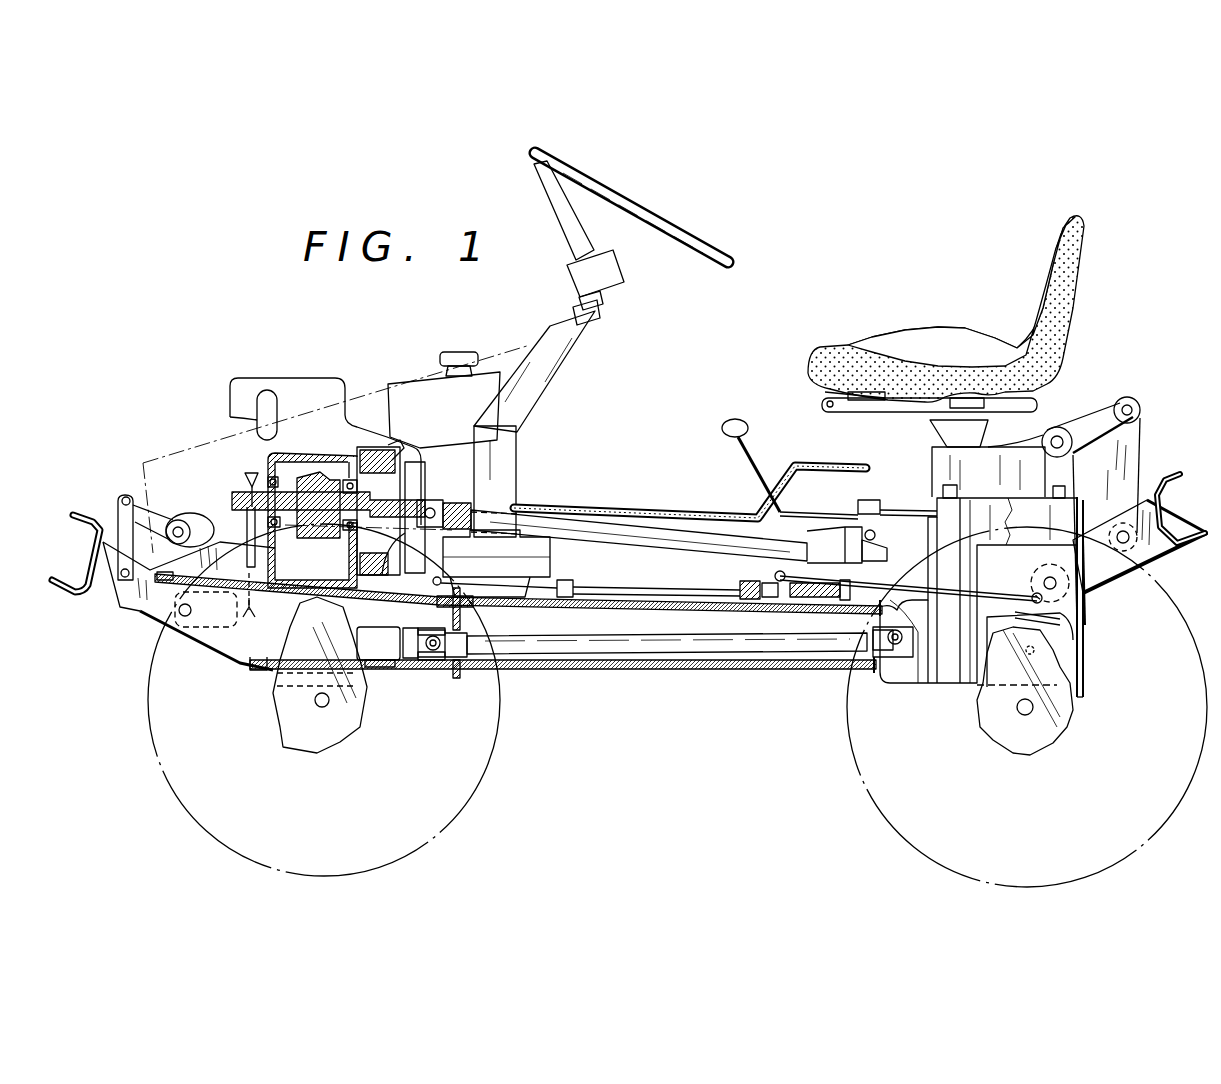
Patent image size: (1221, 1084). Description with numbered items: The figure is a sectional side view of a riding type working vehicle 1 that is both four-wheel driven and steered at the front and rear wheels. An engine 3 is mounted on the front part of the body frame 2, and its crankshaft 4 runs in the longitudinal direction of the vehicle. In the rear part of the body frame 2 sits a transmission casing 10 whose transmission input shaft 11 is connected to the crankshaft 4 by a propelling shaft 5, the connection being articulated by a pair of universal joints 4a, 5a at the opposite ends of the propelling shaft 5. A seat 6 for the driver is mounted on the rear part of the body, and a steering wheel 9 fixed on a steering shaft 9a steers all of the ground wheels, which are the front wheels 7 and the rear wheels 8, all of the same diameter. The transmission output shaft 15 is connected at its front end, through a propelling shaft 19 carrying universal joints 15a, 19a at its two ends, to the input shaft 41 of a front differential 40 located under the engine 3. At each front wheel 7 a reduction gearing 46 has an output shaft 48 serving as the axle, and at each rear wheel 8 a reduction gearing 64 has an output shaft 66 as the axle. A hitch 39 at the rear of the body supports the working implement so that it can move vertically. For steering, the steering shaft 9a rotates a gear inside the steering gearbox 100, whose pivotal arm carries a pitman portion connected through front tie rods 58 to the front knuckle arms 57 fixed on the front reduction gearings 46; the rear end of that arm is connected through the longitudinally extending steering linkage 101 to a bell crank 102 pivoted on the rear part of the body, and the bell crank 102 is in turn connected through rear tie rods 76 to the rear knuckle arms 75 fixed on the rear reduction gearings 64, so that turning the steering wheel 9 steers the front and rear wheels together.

The riding type working vehicle 1 is at (822, 278).
The body frame 2 is at (677, 672).
The engine 3 is at (324, 452).
The crankshaft 4 is at (381, 452).
The universal joint 4a is at (460, 505).
The propelling shaft 5 is at (622, 526).
The universal joint 5a is at (828, 532).
The seat 6 is at (975, 350).
The front wheel 7 is at (178, 810).
The rear wheel 8 is at (893, 828).
The steering wheel 9 is at (720, 258).
The steering shaft 9a is at (594, 300).
The transmission casing 10 is at (933, 690).
The transmission input shaft 11 is at (886, 505).
The transmission output shaft 15 is at (893, 660).
The universal joint 15a is at (877, 657).
The propelling shaft 19 is at (727, 641).
The universal joint 19a is at (452, 670).
The hitch 39 is at (1170, 478).
The front differential 40 is at (273, 670).
The input shaft 41 is at (393, 670).
The reduction gearing 46 is at (333, 751).
The output shaft 48 is at (319, 706).
The knuckle arm 57 is at (417, 670).
The front tie rod 58 is at (441, 512).
The reduction gearing 64 is at (1057, 747).
The output shaft 66 is at (1023, 715).
The knuckle arm 75 is at (1063, 622).
The rear tie rod 76 is at (958, 582).
The steering gearbox 100 is at (530, 545).
The steering linkage 101 is at (694, 569).
The bell crank 102 is at (811, 601).